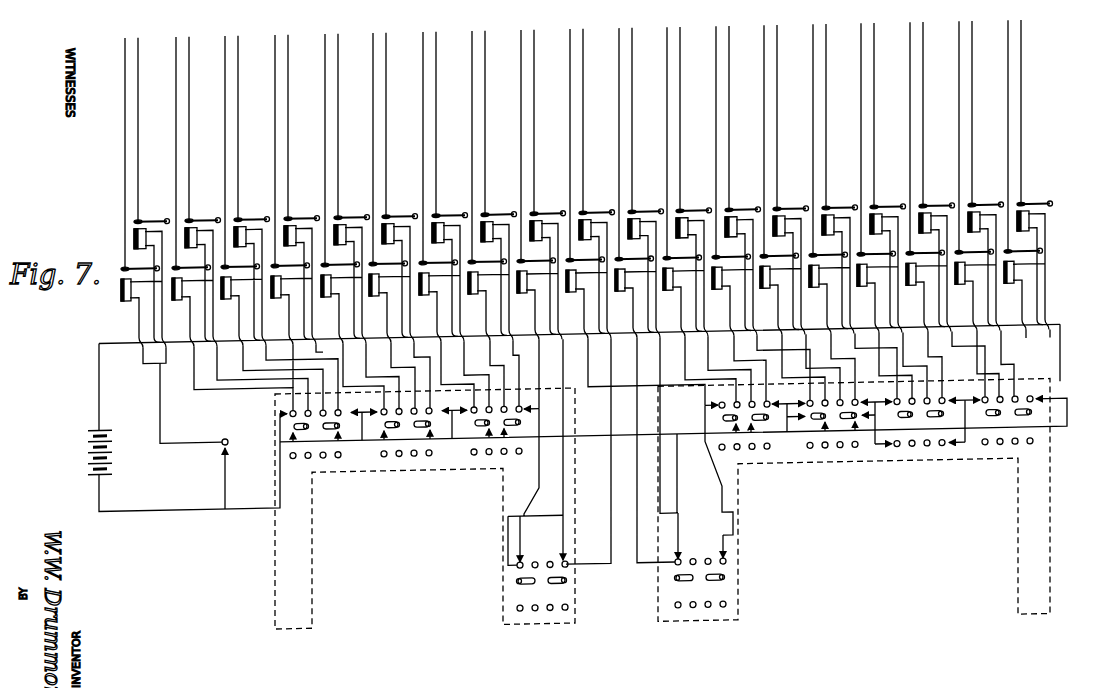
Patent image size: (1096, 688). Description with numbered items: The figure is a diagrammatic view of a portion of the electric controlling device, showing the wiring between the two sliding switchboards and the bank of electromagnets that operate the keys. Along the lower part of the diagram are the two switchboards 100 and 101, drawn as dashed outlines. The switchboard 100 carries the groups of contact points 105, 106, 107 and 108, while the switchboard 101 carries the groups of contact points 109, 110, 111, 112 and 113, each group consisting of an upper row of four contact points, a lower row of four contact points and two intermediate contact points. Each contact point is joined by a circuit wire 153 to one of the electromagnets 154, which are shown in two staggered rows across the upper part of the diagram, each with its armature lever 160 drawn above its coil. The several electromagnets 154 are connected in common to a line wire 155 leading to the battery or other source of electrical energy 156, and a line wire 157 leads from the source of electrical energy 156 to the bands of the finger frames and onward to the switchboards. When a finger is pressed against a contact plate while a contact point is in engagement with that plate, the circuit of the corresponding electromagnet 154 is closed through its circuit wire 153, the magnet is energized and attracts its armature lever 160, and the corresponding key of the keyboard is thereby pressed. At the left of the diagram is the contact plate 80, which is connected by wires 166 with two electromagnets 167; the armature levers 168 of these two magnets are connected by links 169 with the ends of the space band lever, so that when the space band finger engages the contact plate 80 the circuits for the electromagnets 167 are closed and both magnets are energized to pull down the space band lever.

The link 169 is at (137, 180).
The armature lever 168 is at (134, 219).
The electromagnet 167 is at (133, 239).
The electromagnet 154 is at (205, 216).
The armature lever 160 is at (207, 270).
The wires 166 is at (579, 331).
The line wire 155 is at (99, 380).
The source of electrical energy 156 is at (91, 452).
The line wire 157 is at (158, 512).
The circuit wire 153 is at (197, 386).
The contact plate 80 is at (228, 444).
The switchboard 100 is at (397, 476).
The switchboard 101 is at (810, 476).
The group of contact points 105 is at (543, 586).
The group of contact points 106 is at (496, 430).
The group of contact points 107 is at (406, 432).
The group of contact points 108 is at (315, 434).
The group of contact points 109 is at (701, 583).
The group of contact points 110 is at (744, 432).
The group of contact points 111 is at (832, 430).
The group of contact points 112 is at (919, 429).
The group of contact points 113 is at (1007, 427).